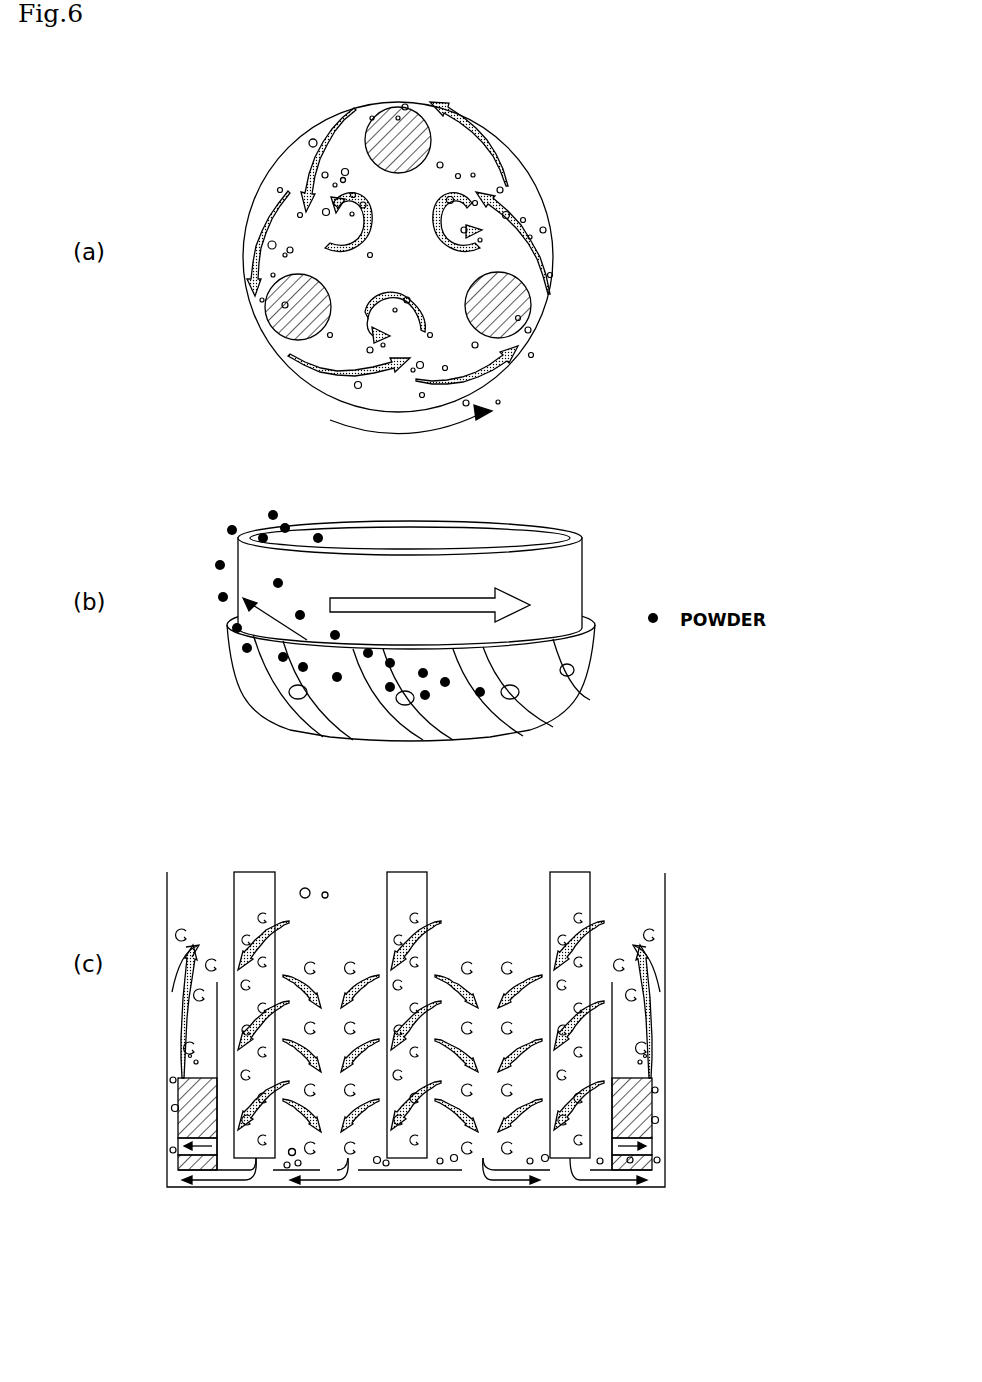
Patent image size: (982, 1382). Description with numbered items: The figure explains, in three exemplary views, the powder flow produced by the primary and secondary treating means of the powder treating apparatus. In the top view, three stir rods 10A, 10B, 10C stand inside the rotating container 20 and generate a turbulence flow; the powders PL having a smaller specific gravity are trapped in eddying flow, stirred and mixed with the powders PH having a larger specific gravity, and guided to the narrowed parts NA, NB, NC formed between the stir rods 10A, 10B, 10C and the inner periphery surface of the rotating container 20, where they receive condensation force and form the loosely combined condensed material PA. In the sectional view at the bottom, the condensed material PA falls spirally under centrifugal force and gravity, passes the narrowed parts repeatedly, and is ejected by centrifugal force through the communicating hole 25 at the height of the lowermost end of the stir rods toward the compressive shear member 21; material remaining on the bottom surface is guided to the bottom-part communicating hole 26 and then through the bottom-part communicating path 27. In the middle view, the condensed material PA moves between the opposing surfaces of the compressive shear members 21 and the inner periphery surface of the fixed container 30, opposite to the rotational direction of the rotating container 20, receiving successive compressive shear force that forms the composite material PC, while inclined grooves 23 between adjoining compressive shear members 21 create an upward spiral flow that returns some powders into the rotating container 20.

The stir rod 10A is at (273, 313).
The stir rod 10B is at (383, 127).
The stir rod 10C is at (523, 307).
The narrowed part NA is at (265, 323).
The narrowed part NB is at (397, 102).
The narrowed part NC is at (535, 327).
The powders having a larger specific gravity PH is at (313, 139).
The powders having a smaller specific gravity PL is at (345, 182).
The condensed material PA is at (295, 1158).
The composite material PC is at (178, 1115).
The rotating container 20 is at (585, 565).
The compressive shear member 21 is at (441, 694).
The inclined groove 23 is at (450, 732).
The communicating hole 25 is at (537, 718).
The bottom-part communicating hole 26 is at (280, 1172).
The bottom-part communicating path 27 is at (408, 1175).
The fixed container 30 is at (665, 908).